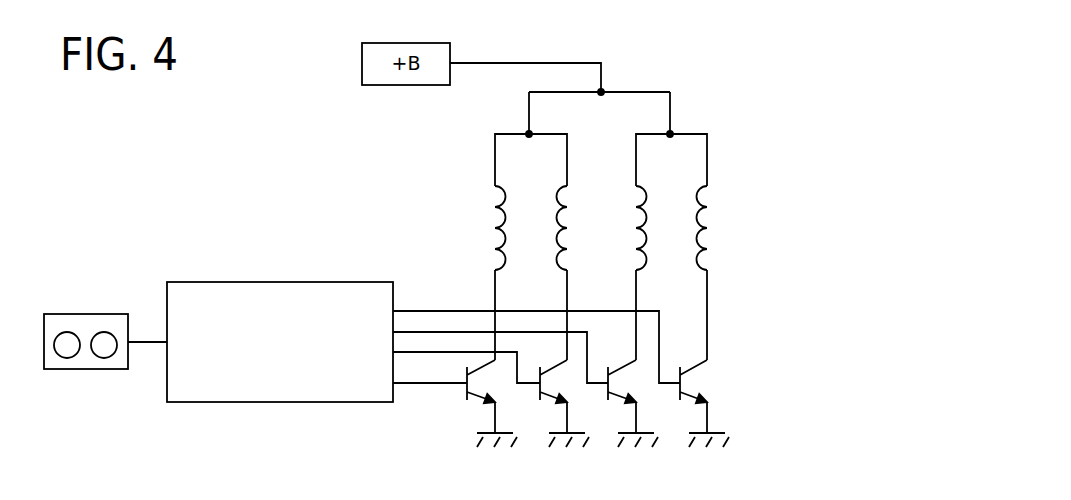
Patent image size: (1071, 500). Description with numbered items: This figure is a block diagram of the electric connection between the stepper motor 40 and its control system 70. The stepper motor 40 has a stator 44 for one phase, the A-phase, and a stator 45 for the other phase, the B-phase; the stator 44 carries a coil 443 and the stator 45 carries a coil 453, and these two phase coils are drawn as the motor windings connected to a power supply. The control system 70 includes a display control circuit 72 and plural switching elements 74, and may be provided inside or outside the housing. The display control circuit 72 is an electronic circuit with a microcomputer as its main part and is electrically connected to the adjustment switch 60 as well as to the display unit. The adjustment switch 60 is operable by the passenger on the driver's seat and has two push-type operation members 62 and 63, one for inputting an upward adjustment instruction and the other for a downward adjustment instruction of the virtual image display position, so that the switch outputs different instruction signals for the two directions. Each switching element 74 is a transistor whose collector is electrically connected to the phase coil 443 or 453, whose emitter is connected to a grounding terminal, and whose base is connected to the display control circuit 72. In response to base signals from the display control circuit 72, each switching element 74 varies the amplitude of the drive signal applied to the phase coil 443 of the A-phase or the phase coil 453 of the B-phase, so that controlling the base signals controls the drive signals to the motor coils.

The stepper motor 40 is at (728, 157).
The stator 44 is at (557, 240).
The coil 443 is at (531, 228).
The stator 45 is at (647, 266).
The coil 453 is at (671, 228).
The adjustment switch 60 is at (84, 380).
The operation member 62 is at (67, 332).
The operation member 63 is at (104, 332).
The control system 70 is at (191, 245).
The display control circuit 72 is at (278, 403).
The switching element 74 is at (675, 453).